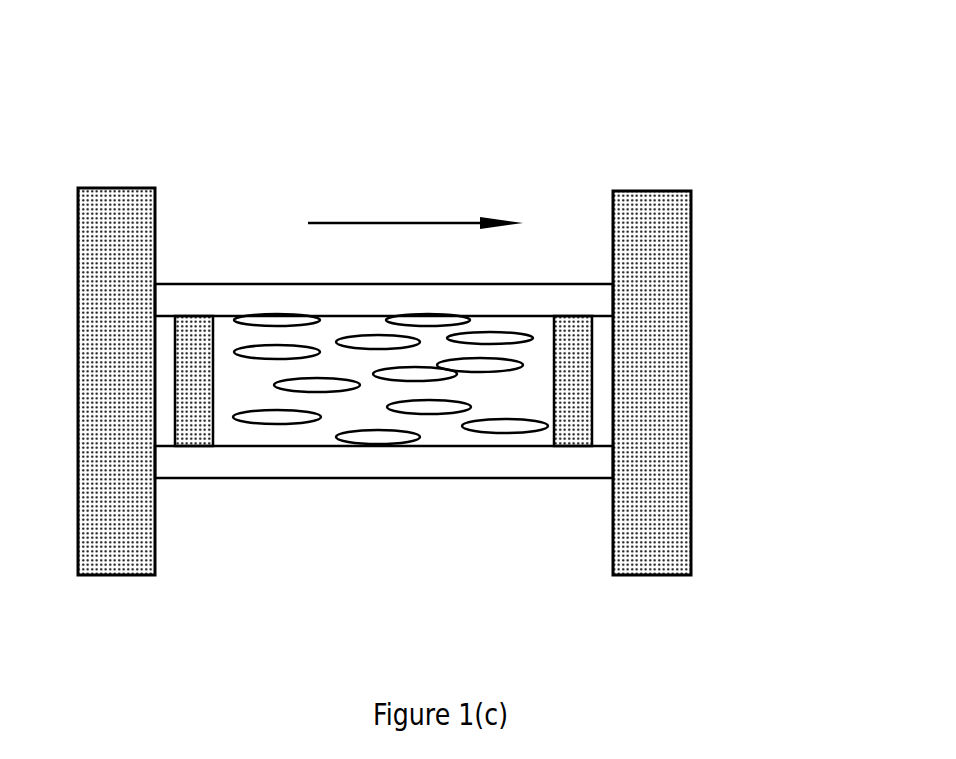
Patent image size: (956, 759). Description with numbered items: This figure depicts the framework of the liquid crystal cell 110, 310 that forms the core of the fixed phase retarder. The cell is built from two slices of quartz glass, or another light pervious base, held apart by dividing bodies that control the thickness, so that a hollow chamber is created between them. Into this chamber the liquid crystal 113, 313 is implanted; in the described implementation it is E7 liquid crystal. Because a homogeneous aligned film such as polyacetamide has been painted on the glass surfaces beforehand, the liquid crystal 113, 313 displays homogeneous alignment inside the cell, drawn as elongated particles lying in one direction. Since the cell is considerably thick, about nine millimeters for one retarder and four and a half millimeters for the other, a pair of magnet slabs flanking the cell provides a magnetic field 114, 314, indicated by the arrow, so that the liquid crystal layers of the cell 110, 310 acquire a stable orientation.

The liquid crystal cell 110 is at (469, 324).
The liquid crystal cell 310 is at (860, 118).
The liquid crystal 113 is at (390, 477).
The liquid crystal 313 is at (442, 423).
The magnetic field 114 is at (415, 198).
The magnetic field 314 is at (415, 198).